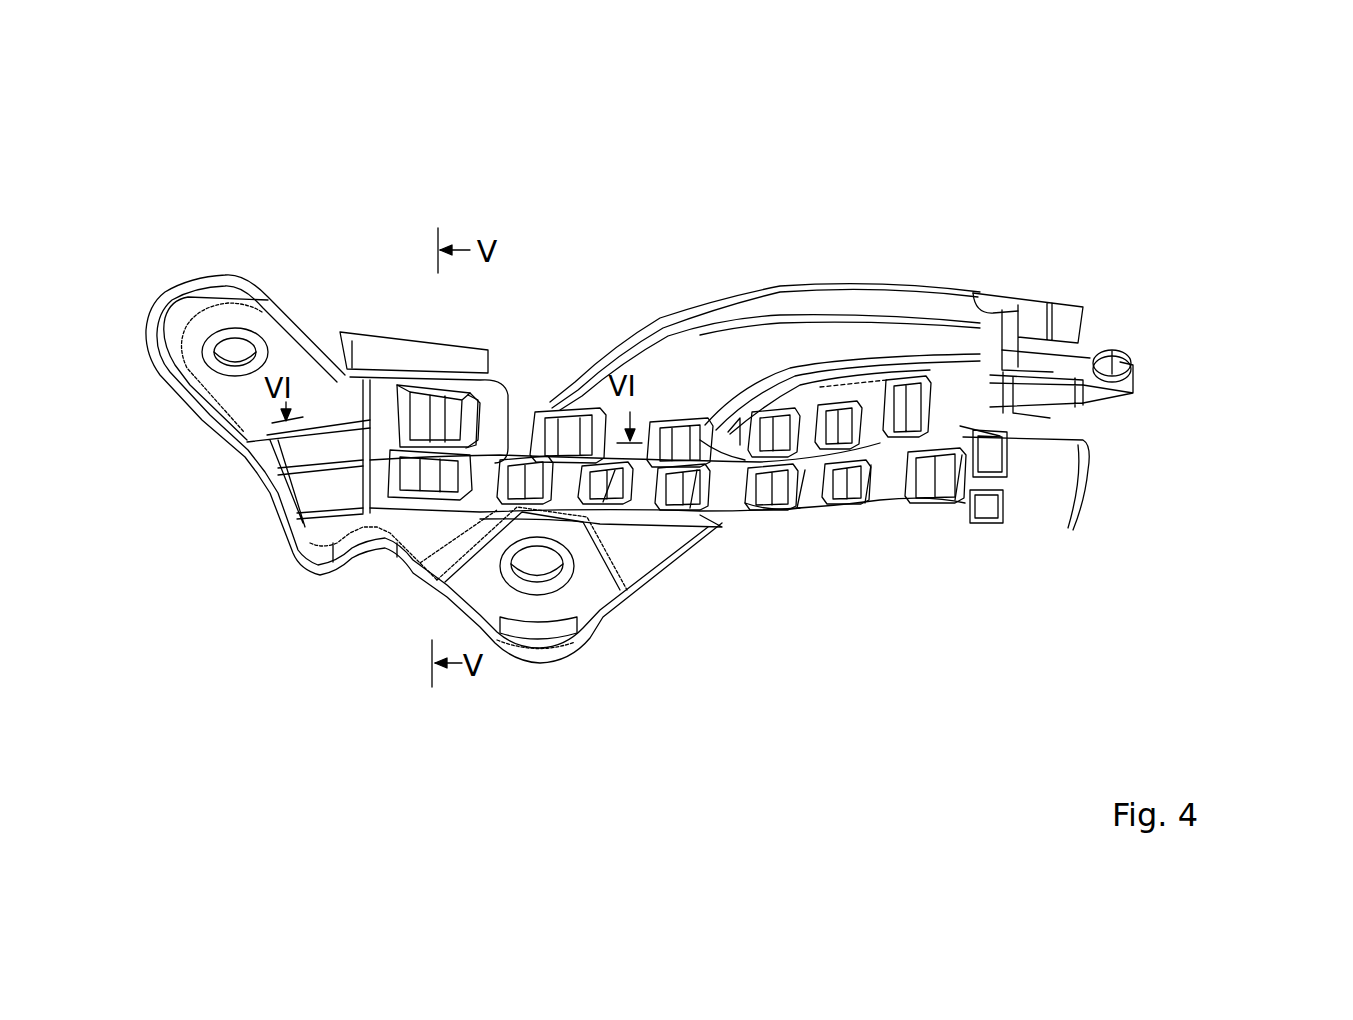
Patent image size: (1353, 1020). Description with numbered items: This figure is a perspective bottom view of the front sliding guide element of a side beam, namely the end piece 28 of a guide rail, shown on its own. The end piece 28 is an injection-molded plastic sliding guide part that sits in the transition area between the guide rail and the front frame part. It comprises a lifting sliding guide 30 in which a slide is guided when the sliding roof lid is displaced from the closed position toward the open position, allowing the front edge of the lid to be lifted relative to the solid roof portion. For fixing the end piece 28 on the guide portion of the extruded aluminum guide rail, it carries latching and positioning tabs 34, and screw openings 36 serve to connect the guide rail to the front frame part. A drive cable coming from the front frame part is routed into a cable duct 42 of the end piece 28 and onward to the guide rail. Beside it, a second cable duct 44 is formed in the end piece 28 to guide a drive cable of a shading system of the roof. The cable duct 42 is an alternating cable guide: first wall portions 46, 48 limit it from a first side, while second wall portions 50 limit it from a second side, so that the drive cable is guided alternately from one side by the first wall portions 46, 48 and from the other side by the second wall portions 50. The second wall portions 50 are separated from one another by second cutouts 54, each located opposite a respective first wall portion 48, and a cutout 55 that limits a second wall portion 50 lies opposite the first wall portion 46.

The end piece 28 is at (928, 218).
The lifting sliding guide 30 is at (730, 363).
The latching and positioning tabs 34 is at (1085, 318).
The screw openings 36 is at (232, 353).
The cable duct 42 is at (561, 413).
The second cable duct 44 is at (772, 506).
The first wall portion 46 is at (420, 395).
The first wall portions 48 is at (577, 425).
The second wall portions 50 is at (517, 430).
The second cutout 54 is at (1045, 306).
The cutout 55 is at (477, 407).